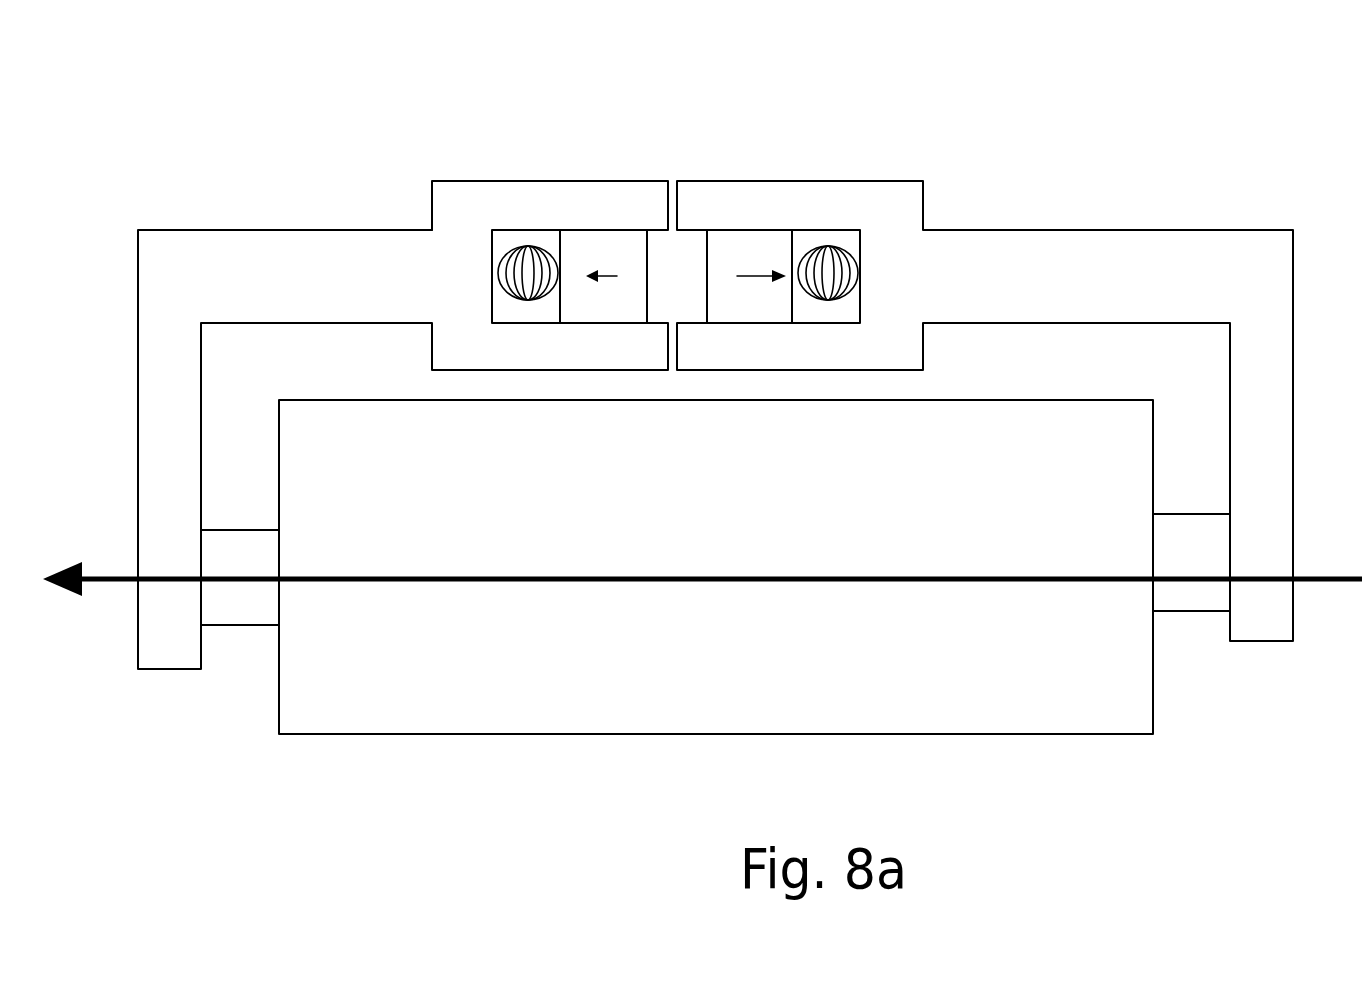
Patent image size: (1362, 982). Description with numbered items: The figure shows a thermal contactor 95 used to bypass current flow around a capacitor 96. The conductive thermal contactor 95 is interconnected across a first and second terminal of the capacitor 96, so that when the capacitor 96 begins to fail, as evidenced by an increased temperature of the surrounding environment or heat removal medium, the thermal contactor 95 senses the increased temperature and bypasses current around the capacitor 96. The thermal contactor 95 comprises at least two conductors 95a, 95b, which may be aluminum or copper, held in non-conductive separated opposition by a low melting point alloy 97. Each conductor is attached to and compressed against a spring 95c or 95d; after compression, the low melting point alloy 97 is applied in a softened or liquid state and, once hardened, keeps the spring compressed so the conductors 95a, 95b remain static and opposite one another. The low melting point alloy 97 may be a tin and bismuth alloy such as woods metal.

The thermal contactor 95 is at (1066, 128).
The conductor 95a is at (752, 245).
The conductor 95b is at (587, 245).
The spring 95c is at (510, 252).
The spring 95d is at (837, 253).
The capacitor 96 is at (597, 734).
The low melting point alloy 97 is at (662, 323).